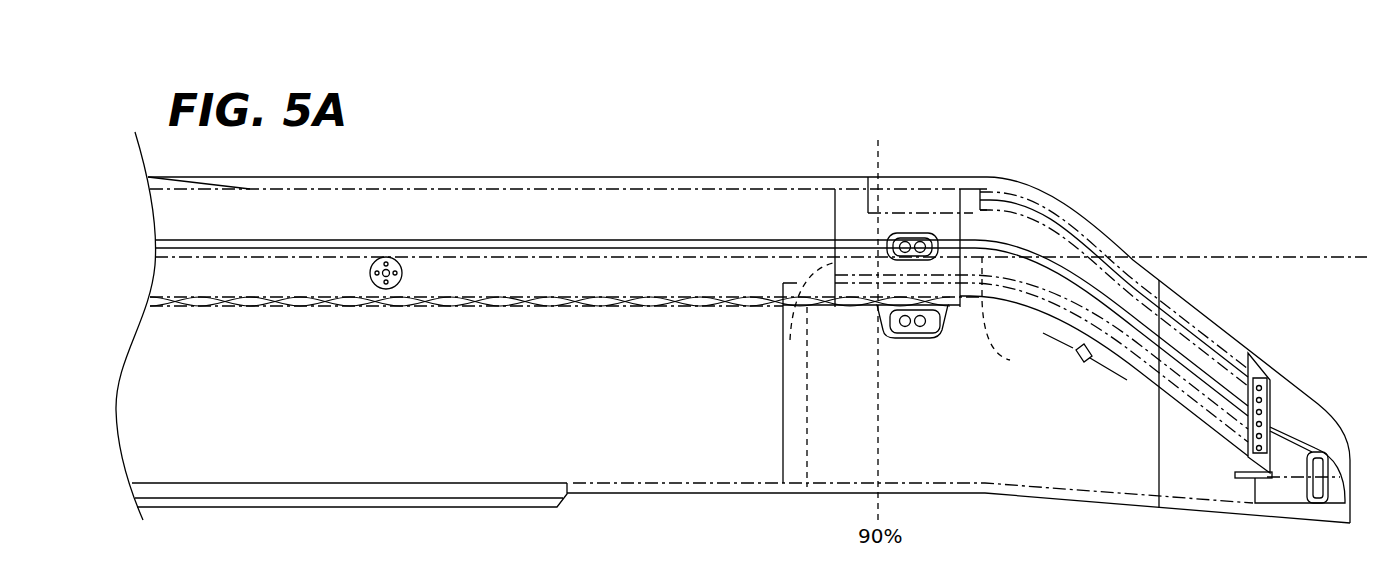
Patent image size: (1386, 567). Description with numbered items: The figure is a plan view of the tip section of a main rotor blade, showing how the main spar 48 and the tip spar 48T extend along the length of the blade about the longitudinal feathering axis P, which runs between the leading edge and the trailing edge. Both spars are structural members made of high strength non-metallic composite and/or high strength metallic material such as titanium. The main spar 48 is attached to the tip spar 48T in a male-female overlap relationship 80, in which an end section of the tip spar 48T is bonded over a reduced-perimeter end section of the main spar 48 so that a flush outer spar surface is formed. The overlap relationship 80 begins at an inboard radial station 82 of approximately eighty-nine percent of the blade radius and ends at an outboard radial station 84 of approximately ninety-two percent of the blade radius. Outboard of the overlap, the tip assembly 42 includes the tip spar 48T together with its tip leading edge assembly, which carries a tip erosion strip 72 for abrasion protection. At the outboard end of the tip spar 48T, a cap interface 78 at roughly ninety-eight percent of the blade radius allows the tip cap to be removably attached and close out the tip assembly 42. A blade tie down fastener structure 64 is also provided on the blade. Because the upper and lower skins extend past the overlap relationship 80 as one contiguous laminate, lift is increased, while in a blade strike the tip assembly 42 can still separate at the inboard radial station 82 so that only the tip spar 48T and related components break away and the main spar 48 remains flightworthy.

The tip assembly 42 is at (1212, 201).
The main spar 48 is at (466, 275).
The tip spar 48T is at (1152, 385).
The blade tie down fastener structure 64 is at (374, 284).
The tip erosion strip 72 is at (987, 180).
The cap interface 78 is at (878, 160).
The overlap relationship 80 is at (922, 118).
The inboard radial station 82 is at (790, 340).
The outboard radial station 84 is at (957, 317).
The longitudinal feathering axis P is at (1275, 257).